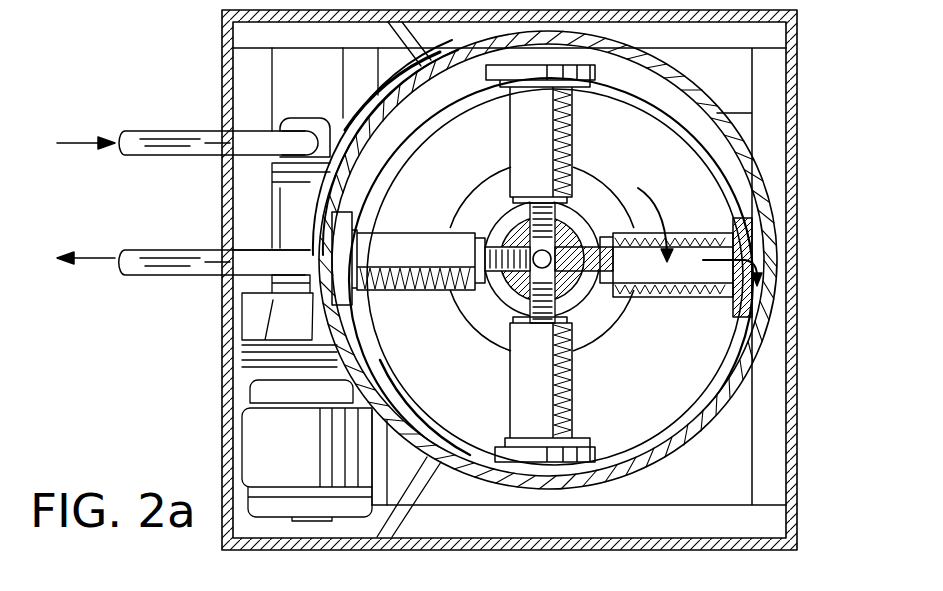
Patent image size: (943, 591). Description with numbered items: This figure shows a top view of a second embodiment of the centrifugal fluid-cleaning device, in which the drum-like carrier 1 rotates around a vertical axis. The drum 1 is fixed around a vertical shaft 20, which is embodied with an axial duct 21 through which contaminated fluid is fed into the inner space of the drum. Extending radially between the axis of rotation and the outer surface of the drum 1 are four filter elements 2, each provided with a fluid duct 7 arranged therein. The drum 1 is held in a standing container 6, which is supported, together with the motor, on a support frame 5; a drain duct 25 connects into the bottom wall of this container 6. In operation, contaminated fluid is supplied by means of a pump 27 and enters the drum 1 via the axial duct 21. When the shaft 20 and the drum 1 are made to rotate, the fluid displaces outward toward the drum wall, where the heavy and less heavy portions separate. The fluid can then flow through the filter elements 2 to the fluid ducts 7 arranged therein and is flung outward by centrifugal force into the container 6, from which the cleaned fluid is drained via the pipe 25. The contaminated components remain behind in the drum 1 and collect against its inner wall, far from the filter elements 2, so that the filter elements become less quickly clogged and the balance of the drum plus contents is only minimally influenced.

The drum-like carrier 1 is at (760, 150).
The filter elements 2 is at (527, 112).
The support frame 5 is at (760, 525).
The container 6 is at (776, 182).
The fluid duct 7 is at (697, 307).
The vertical shaft 20 is at (480, 190).
The axial duct 21 is at (583, 198).
The drain duct 25 is at (197, 283).
The pump 27 is at (288, 208).